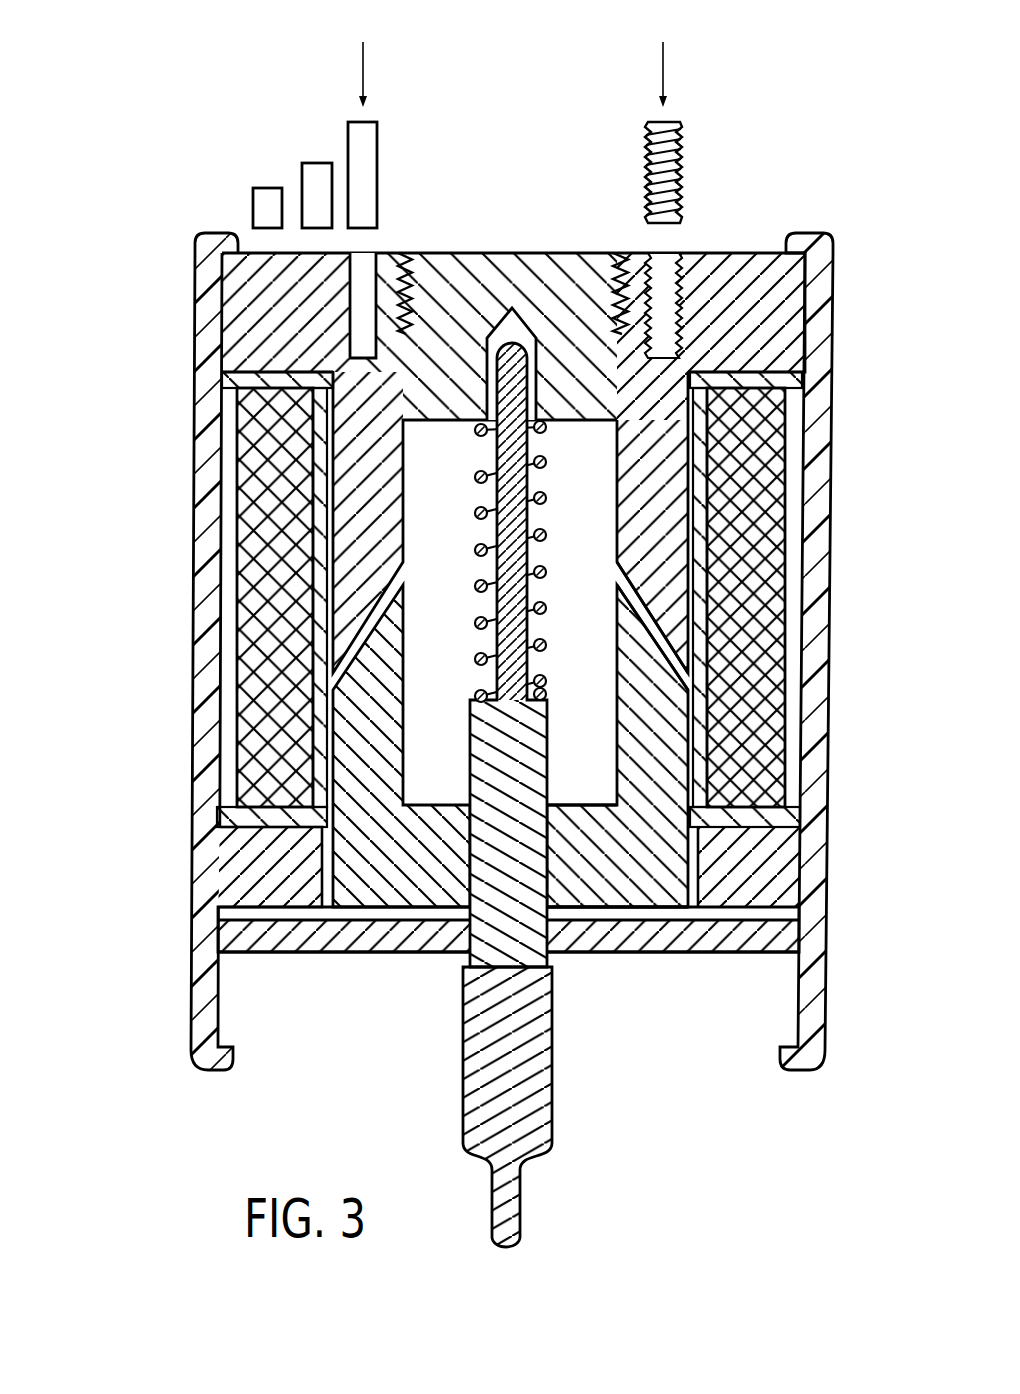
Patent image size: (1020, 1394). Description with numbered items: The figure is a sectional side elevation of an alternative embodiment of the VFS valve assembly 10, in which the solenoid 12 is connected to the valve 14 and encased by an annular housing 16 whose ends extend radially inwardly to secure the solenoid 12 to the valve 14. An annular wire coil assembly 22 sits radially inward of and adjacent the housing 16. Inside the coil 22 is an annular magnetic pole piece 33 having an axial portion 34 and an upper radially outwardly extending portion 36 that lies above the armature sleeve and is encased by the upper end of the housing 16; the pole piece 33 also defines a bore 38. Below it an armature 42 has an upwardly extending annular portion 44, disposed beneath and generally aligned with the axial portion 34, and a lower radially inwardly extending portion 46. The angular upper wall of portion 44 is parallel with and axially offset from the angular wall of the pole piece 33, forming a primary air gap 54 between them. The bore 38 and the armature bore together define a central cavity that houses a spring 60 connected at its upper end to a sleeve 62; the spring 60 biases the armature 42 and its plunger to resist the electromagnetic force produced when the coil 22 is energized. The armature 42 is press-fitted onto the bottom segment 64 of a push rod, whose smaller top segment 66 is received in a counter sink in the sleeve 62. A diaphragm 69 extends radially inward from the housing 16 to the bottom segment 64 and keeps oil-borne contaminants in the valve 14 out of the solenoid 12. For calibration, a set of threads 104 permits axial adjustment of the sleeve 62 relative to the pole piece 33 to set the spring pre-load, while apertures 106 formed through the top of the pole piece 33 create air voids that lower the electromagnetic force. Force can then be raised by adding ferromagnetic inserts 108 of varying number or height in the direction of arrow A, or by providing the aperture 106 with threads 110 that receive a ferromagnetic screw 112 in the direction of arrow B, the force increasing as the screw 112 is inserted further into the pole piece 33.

The VFS valve assembly 10 is at (511, 152).
The solenoid 12 is at (148, 608).
The valve 14 is at (398, 1127).
The annular housing 16 is at (815, 788).
The wire coil assembly 22 is at (770, 538).
The magnetic pole piece 33 is at (665, 470).
The axial portion of pole piece 34 is at (683, 504).
The upper radially outwardly extending portion of pole piece 36 is at (765, 254).
The bore of pole piece 38 is at (617, 547).
The armature 42 is at (601, 874).
The upwardly extending annular portion of armature 44 is at (665, 751).
The lower radially inwardly extending portion of armature 46 is at (645, 898).
The primary air gap 54 is at (672, 631).
The spring 60 is at (546, 452).
The sleeve 62 is at (580, 252).
The bottom segment of push rod 64 is at (470, 958).
The top segment of push rod 66 is at (490, 505).
The diaphragm 69 is at (765, 955).
The threads 104 is at (416, 295).
The apertures 106 is at (385, 248).
The ferromagnetic inserts 108 is at (310, 125).
The threads of aperture 110 is at (668, 257).
The ferromagnetic screw 112 is at (680, 160).